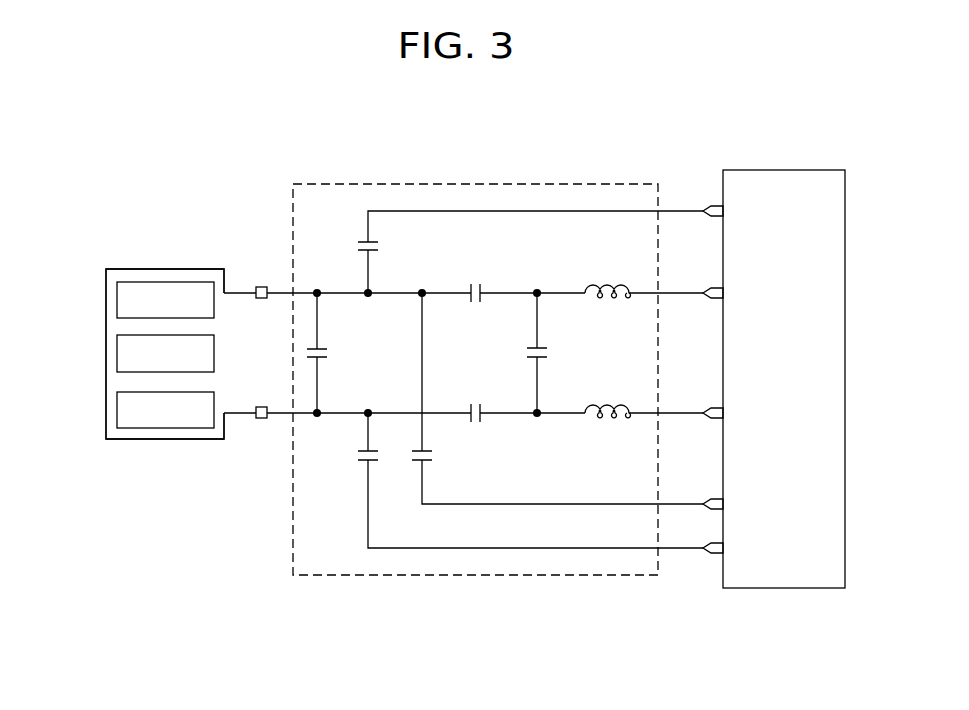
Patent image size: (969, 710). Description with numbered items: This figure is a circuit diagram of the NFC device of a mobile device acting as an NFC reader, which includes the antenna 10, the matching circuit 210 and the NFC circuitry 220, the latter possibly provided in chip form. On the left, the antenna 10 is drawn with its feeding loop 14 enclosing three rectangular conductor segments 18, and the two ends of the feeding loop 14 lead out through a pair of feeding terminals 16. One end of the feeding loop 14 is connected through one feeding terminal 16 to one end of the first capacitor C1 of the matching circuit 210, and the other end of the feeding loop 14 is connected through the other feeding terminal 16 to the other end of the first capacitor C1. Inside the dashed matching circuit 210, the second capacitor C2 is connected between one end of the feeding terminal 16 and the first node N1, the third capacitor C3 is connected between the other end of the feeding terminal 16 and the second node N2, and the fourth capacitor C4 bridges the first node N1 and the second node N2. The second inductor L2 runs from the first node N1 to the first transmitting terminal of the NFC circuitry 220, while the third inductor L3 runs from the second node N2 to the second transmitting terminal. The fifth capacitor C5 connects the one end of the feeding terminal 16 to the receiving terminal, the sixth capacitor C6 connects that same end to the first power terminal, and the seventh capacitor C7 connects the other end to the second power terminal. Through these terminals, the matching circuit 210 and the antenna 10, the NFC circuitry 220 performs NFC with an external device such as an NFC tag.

The antenna 10 is at (145, 260).
The feeding loop 14 is at (168, 441).
The feeding terminal 16 is at (262, 286).
The antenna coil conductors 18 is at (116, 300).
The matching circuit 210 is at (483, 183).
The NFC circuitry 220 is at (783, 169).
The first capacitor C1 is at (330, 353).
The second capacitor C2 is at (475, 280).
The third capacitor C3 is at (475, 400).
The fourth capacitor C4 is at (551, 353).
The fifth capacitor C5 is at (530, 252).
The sixth capacitor C6 is at (557, 398).
The seventh capacitor C7 is at (517, 480).
The second inductor L2 is at (607, 280).
The third inductor L3 is at (608, 400).
The first node N1 is at (537, 279).
The second node N2 is at (537, 427).